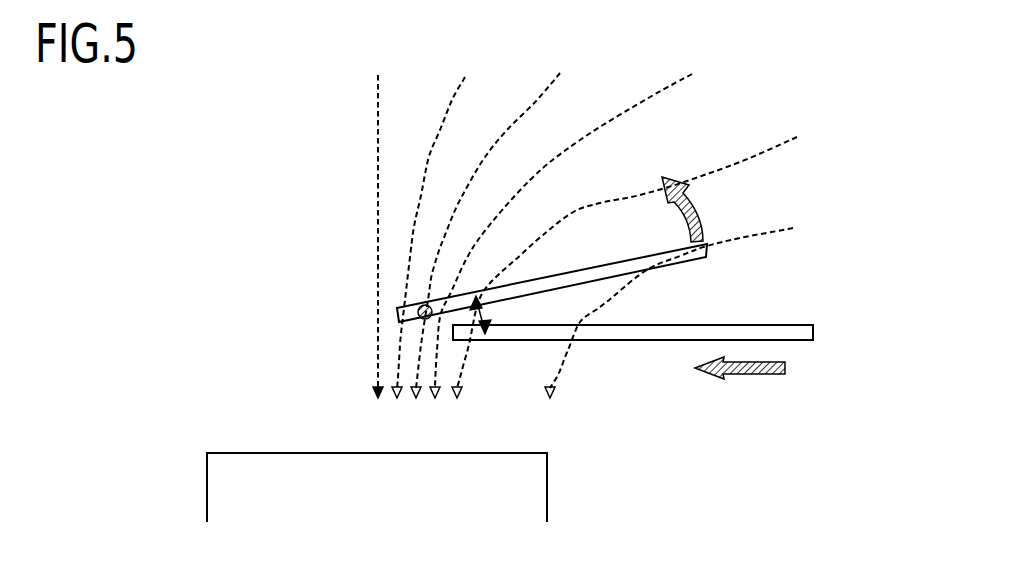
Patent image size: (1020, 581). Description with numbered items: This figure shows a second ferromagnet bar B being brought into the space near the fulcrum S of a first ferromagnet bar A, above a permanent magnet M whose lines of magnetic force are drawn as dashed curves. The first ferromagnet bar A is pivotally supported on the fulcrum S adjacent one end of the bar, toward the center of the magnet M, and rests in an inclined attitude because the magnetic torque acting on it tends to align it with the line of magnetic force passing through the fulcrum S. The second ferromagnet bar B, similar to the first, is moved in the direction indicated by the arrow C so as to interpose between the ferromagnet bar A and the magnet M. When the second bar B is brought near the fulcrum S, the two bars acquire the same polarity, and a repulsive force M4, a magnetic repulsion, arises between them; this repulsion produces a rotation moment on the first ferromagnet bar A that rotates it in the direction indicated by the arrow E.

The first ferromagnet bar A is at (646, 257).
The second ferromagnet bar B is at (738, 325).
The arrow indicating direction of movement C is at (740, 381).
The arrow indicating direction of rotation E is at (689, 209).
The fulcrum S is at (421, 306).
The repulsive force M4 is at (482, 316).
The magnet M is at (547, 492).